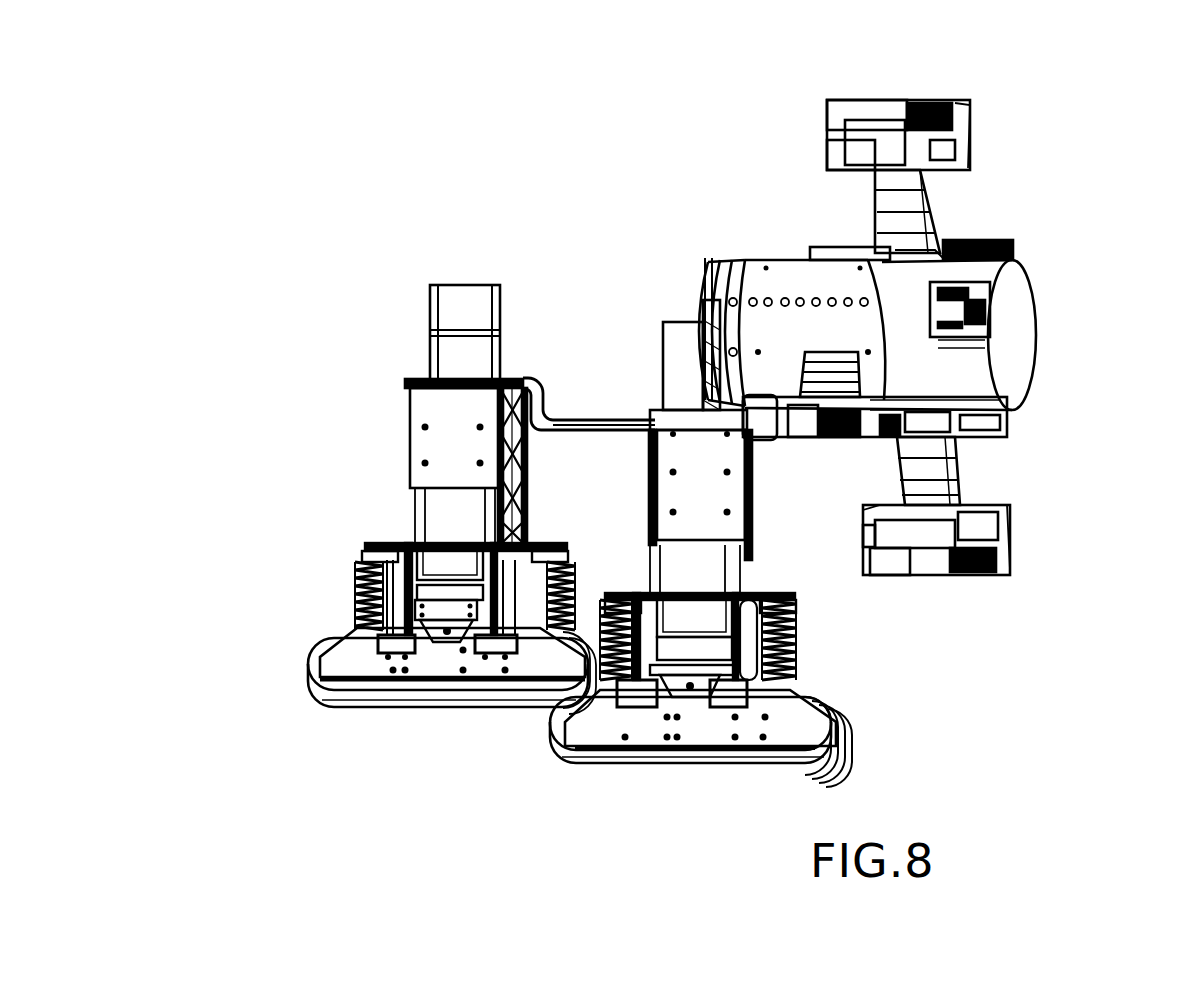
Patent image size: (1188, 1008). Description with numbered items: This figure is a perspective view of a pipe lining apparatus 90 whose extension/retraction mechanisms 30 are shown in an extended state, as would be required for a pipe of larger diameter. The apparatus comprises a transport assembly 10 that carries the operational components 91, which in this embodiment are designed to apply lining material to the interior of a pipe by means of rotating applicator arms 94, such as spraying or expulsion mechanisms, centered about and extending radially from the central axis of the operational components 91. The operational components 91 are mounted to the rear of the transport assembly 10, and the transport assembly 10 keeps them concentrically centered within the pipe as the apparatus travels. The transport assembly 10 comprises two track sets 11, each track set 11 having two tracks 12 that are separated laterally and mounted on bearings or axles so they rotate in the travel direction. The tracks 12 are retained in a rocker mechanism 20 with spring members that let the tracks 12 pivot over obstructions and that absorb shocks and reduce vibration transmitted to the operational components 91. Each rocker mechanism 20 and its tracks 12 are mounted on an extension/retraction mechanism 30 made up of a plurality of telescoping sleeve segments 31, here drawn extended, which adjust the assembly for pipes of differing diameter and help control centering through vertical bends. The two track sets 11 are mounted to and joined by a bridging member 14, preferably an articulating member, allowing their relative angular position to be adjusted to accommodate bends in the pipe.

The pipe lining apparatus 90 is at (340, 212).
The operational components 91 is at (1060, 225).
The rotating applicator arms 94 is at (915, 105).
The transport assembly 10 is at (275, 605).
The track set 11 is at (400, 743).
The track 12 is at (306, 676).
The bridging member 14 is at (597, 412).
The rocker mechanism 20 is at (562, 545).
The extension/retraction mechanism 30 is at (405, 435).
The telescoping sleeve segments 31 is at (440, 520).